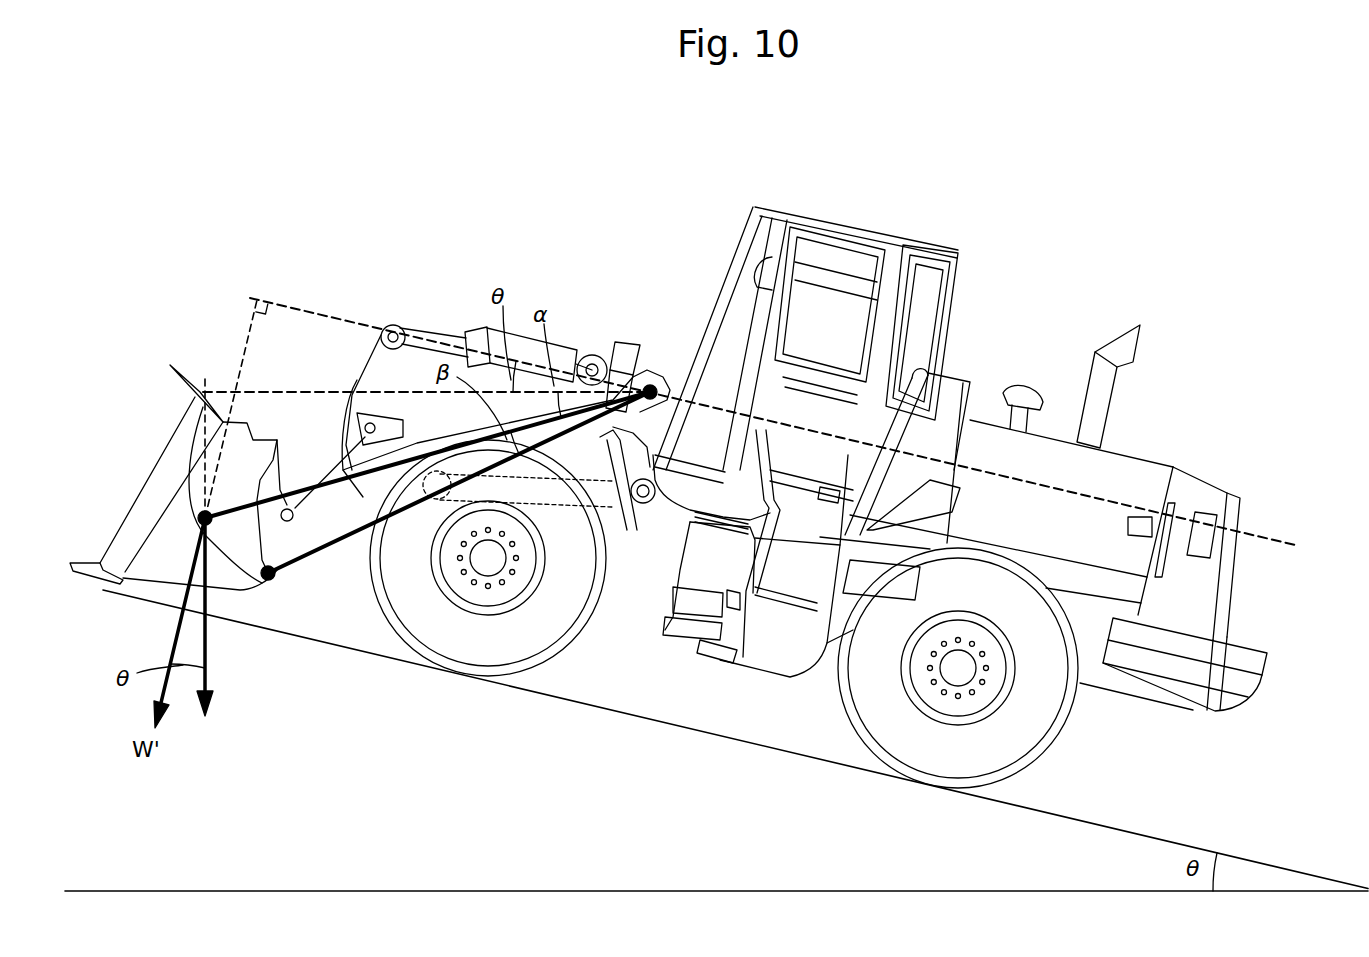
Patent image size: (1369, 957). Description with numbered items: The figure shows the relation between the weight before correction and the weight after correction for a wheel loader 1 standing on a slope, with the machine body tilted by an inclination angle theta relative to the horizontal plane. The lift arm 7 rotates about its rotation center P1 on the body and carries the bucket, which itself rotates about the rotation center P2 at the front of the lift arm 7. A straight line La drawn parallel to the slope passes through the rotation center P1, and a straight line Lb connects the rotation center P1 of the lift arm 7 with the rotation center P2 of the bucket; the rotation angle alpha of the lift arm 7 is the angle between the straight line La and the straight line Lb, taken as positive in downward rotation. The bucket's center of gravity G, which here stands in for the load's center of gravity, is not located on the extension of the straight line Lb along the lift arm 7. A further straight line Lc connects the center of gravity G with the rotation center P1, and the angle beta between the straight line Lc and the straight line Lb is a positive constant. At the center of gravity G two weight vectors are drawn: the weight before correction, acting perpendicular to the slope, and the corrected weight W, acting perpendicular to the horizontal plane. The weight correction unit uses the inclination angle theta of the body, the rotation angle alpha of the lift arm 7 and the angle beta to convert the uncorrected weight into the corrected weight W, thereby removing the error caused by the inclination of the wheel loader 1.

The wheel loader 1 is at (1103, 240).
The lift arm 7 is at (310, 567).
The straight line parallel to a slope La is at (332, 316).
The straight line connecting rotation centers P1 and P2 Lb is at (356, 575).
The straight line connecting center of gravity G and rotation center P1 Lc is at (330, 483).
The bucket's center of gravity G is at (200, 514).
The rotation center of the lift arm P1 is at (651, 383).
The rotation center of the bucket P2 is at (264, 582).
The corrected weight W is at (203, 634).